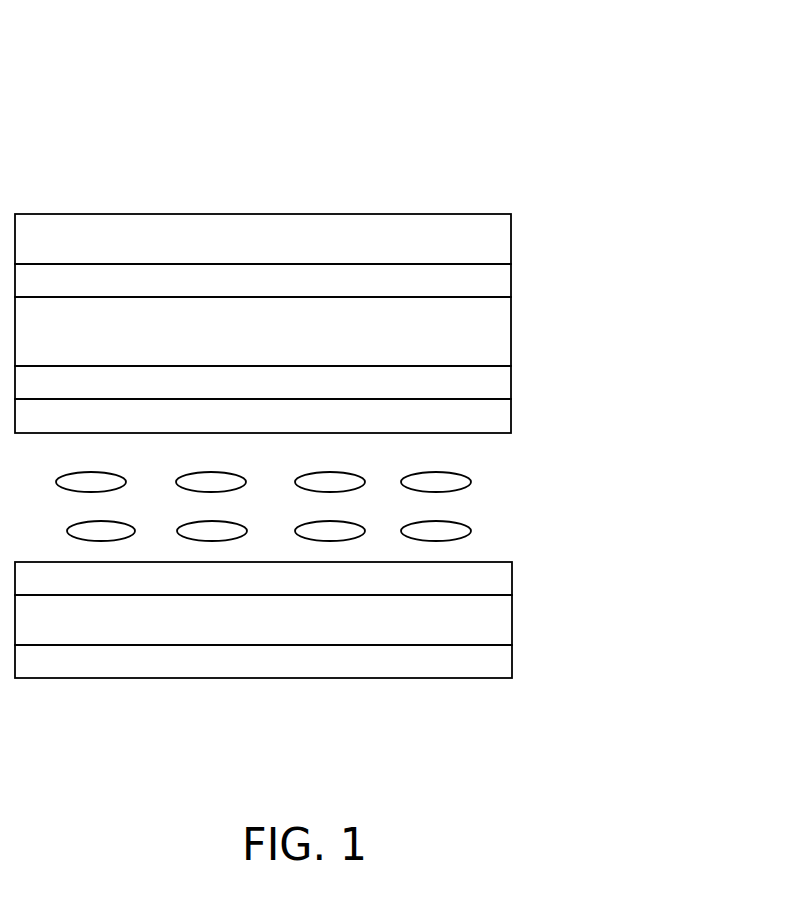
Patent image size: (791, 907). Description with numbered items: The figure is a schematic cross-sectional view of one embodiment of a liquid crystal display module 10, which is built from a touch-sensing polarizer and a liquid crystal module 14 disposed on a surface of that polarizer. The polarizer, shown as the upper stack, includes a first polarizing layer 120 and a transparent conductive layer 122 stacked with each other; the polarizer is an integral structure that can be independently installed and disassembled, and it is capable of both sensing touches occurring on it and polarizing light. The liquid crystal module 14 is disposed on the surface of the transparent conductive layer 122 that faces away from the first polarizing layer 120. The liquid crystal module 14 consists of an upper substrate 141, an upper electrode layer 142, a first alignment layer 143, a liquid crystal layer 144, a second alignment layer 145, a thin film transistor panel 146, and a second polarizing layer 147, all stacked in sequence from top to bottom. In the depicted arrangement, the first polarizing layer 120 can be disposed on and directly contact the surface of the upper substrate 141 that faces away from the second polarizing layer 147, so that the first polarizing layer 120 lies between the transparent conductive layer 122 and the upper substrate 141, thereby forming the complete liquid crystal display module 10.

The liquid crystal display module 10 is at (252, 108).
The first polarizing layer 120 is at (500, 233).
The transparent conductive layer 122 is at (497, 283).
The liquid crystal module 14 is at (603, 307).
The upper substrate 141 is at (490, 338).
The upper electrode layer 142 is at (492, 382).
The first alignment layer 143 is at (497, 418).
The liquid crystal layer 144 is at (466, 508).
The second alignment layer 145 is at (498, 579).
The thin film transistor panel 146 is at (495, 622).
The second polarizing layer 147 is at (493, 664).